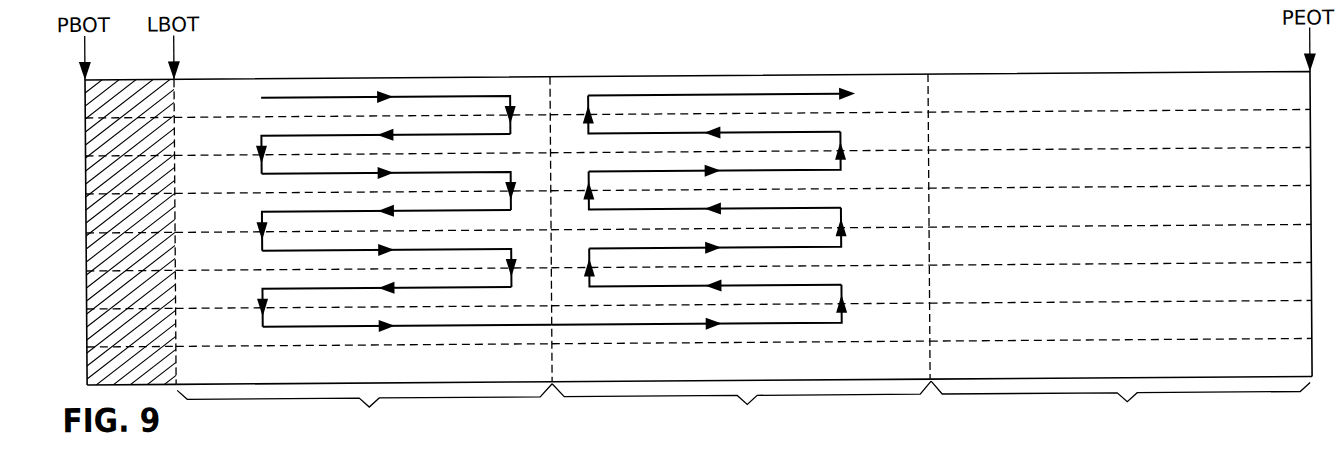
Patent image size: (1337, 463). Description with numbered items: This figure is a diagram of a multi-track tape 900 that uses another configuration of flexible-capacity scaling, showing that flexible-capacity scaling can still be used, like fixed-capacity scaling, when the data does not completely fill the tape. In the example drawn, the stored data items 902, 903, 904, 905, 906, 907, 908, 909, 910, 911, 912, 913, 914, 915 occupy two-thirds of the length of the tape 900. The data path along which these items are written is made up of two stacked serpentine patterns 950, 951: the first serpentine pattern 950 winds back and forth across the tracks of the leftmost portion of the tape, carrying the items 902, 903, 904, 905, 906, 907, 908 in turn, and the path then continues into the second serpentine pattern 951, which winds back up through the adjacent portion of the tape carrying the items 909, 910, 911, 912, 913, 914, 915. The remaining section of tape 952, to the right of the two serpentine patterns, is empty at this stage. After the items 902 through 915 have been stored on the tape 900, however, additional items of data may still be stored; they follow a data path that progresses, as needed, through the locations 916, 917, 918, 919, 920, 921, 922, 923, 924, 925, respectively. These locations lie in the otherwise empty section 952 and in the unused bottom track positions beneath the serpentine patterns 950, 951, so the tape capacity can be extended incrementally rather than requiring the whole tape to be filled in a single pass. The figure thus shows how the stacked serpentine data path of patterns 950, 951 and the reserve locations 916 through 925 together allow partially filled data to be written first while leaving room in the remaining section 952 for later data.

The tape 900 is at (808, 56).
The data item 902 is at (233, 111).
The data item 903 is at (233, 149).
The data item 904 is at (233, 187).
The data item 905 is at (233, 225).
The data item 906 is at (233, 264).
The data item 907 is at (233, 302).
The data item 908 is at (233, 340).
The data item 909 is at (907, 340).
The data item 910 is at (907, 302).
The data item 911 is at (907, 264).
The data item 912 is at (907, 225).
The data item 913 is at (907, 187).
The data item 914 is at (907, 149).
The data item 915 is at (907, 111).
The location 916 is at (1145, 111).
The location 917 is at (1145, 149).
The location 918 is at (1145, 187).
The location 919 is at (1145, 225).
The location 920 is at (1145, 264).
The location 921 is at (1145, 302).
The location 922 is at (1145, 340).
The location 923 is at (1145, 378).
The location 924 is at (907, 378).
The location 925 is at (233, 378).
The serpentine pattern 950 is at (364, 411).
The serpentine pattern 951 is at (741, 408).
The remaining section of tape 952 is at (1120, 405).